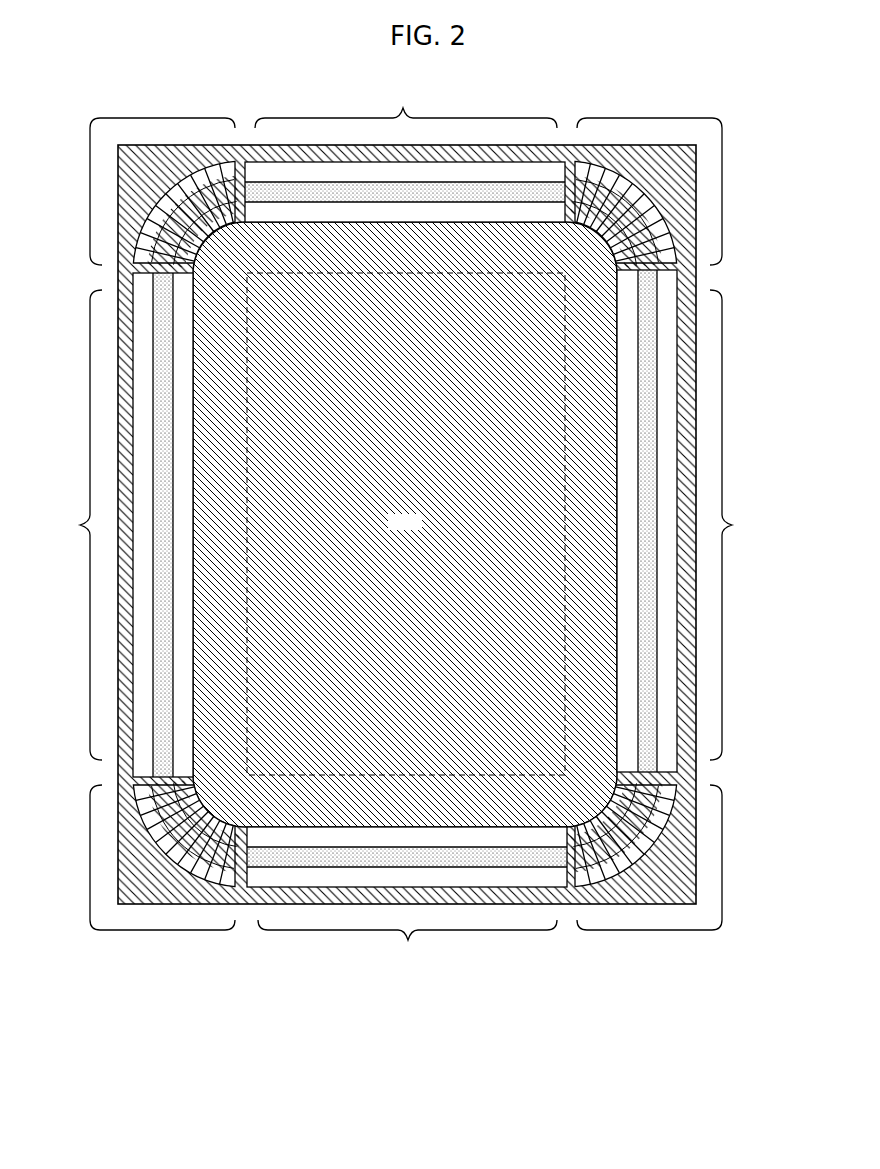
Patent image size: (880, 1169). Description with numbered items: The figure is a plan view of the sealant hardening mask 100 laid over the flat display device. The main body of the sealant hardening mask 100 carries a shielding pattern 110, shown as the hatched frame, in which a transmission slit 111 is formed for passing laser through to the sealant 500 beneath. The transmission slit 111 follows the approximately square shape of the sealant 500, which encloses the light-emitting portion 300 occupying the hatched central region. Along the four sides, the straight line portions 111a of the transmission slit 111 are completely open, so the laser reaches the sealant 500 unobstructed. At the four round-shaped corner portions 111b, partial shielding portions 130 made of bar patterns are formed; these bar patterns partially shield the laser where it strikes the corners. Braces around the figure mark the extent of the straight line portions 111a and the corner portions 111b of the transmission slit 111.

The sealant hardening mask 100 is at (700, 458).
The shielding pattern 110 is at (693, 384).
The transmission slit 111 is at (667, 651).
The straight line portions 111a is at (407, 529).
The corner portions 111b is at (405, 527).
The partial shielding portion 130 is at (138, 207).
The light-emitting portion 300 is at (420, 532).
The sealant 500 is at (652, 700).